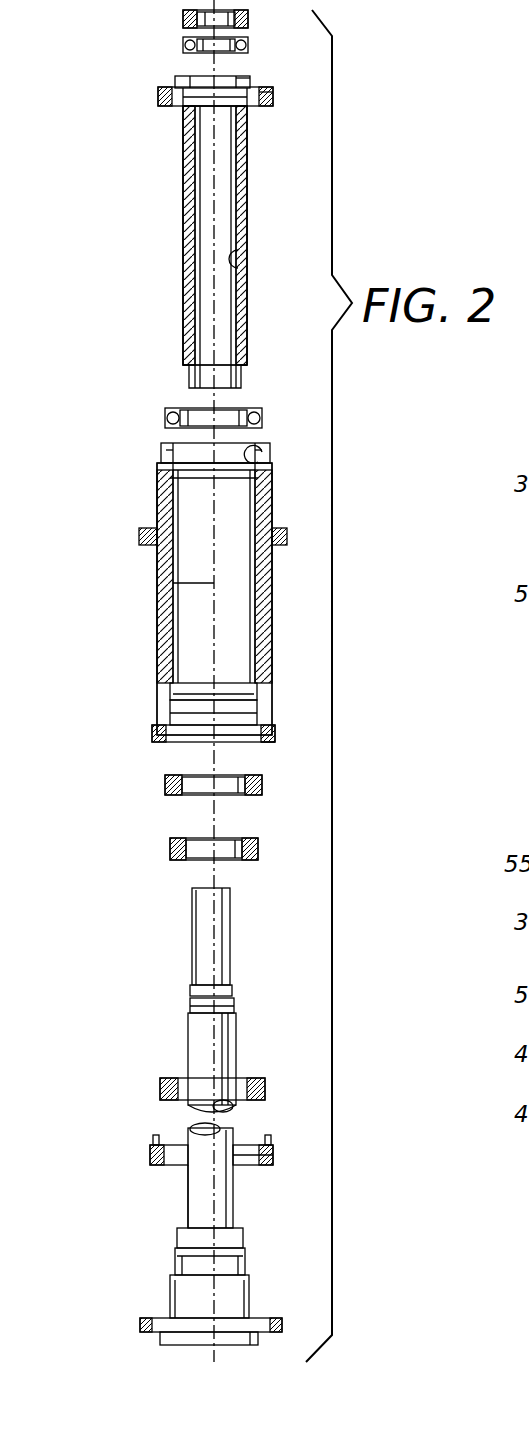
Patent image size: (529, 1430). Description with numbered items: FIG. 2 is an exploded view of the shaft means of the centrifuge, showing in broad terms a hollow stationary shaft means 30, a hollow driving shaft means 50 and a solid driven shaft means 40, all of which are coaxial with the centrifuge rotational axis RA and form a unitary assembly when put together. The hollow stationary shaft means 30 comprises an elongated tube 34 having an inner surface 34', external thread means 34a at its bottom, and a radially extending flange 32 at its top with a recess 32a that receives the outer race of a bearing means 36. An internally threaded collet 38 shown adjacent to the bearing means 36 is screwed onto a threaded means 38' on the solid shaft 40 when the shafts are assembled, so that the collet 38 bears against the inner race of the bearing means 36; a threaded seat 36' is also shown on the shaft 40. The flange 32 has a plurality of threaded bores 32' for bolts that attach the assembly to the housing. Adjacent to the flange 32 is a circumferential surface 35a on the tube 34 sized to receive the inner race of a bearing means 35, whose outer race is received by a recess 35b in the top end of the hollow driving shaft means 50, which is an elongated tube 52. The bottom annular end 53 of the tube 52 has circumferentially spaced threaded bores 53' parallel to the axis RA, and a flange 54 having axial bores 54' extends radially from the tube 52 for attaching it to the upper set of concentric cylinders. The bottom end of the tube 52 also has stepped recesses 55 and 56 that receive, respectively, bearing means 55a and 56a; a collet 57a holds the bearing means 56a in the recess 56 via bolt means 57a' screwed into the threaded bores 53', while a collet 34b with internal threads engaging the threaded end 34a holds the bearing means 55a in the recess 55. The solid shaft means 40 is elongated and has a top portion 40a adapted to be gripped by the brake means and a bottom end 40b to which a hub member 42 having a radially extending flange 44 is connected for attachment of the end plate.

The hollow stationary shaft means 30 is at (255, 222).
The radially extending flange 32 is at (185, 85).
The recess 32a is at (238, 81).
The threaded bores 32' is at (296, 80).
The elongated tube 34 is at (177, 247).
The inner surface 34' is at (263, 260).
The external thread means 34a is at (190, 382).
The collet 34b is at (168, 860).
The bearing means 35 is at (164, 418).
The circumferential surface 35a is at (183, 109).
The recess 35b is at (260, 452).
The bearing means 36 is at (175, 44).
The shaft bearing seat 36' is at (168, 999).
The internally threaded collet 38 is at (169, 18).
The threaded means 38' is at (255, 979).
The solid driven shaft means 40 is at (242, 1058).
The top portion 40a is at (232, 907).
The bottom end 40b is at (188, 1211).
The hub member 42 is at (246, 1302).
The radially extending flange 44 is at (140, 1324).
The hollow driving shaft means 50 is at (146, 618).
The elongated tube 52 is at (156, 663).
The bottom annular end 53 is at (167, 748).
The threaded bores 53' is at (293, 759).
The flange 54 is at (299, 555).
The axial bores 54' is at (120, 514).
The stepped recess 55 is at (239, 688).
The bearing means 55a is at (173, 800).
The stepped recess 56 is at (244, 718).
The bearing means 56a is at (160, 1096).
The collet 57a is at (283, 1191).
The bolt means 57a' is at (165, 1171).
The centrifuge rotational axis RA is at (172, 583).